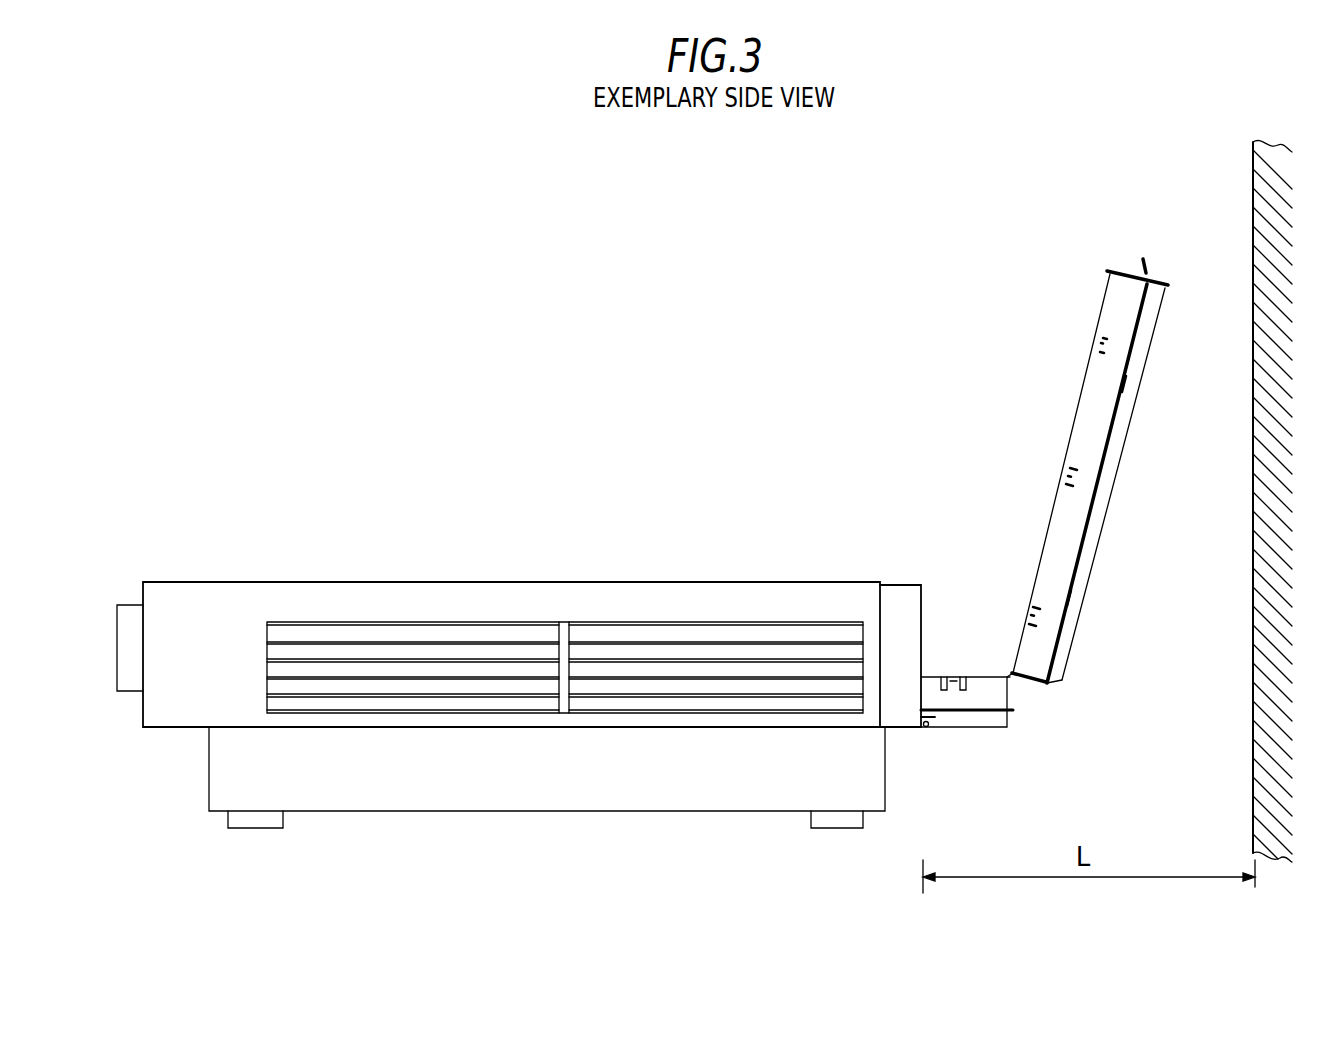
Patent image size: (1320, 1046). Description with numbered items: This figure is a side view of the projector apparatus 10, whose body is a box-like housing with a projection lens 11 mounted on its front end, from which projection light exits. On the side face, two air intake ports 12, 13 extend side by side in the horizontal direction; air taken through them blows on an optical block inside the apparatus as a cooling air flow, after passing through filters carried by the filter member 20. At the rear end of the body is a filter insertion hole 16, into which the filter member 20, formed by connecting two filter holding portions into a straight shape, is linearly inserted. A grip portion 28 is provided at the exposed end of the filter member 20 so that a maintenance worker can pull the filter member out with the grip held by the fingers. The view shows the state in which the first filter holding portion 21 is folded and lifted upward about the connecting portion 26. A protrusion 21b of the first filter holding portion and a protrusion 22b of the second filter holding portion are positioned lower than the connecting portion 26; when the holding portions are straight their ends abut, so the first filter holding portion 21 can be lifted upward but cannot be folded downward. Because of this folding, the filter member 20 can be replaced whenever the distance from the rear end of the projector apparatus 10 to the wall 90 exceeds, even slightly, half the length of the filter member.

The projector apparatus 10 is at (497, 581).
The projection lens 11 is at (131, 603).
The air intake port 12 is at (420, 691).
The air intake port 13 is at (625, 695).
The filter insertion hole 16 is at (926, 727).
The filter member 20 is at (1087, 600).
The first filter holding portion 21 is at (1107, 450).
The protrusion 21b is at (1045, 687).
The protrusion 22b is at (1012, 712).
The connecting portion 26 is at (1015, 681).
The grip portion 28 is at (1141, 258).
The wall 90 is at (1253, 167).